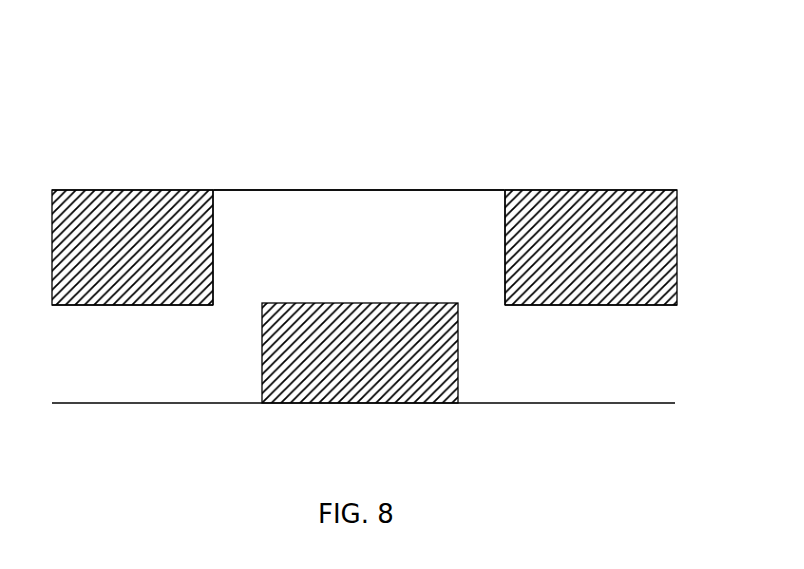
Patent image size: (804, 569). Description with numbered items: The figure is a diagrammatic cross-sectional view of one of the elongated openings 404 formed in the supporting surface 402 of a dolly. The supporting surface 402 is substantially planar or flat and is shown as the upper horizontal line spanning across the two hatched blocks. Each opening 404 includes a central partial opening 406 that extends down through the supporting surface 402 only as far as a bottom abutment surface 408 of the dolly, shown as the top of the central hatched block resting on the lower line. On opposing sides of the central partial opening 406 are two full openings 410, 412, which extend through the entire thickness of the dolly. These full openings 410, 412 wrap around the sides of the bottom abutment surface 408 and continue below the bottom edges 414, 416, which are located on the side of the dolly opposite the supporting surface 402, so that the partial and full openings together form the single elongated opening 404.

The supporting surface 402 is at (102, 190).
The opening 404 is at (498, 72).
The central partial opening 406 is at (379, 207).
The bottom abutment surface 408 is at (372, 302).
The full opening 410 is at (223, 290).
The full opening 412 is at (493, 290).
The bottom edge 414 is at (210, 305).
The bottom edge 416 is at (512, 305).